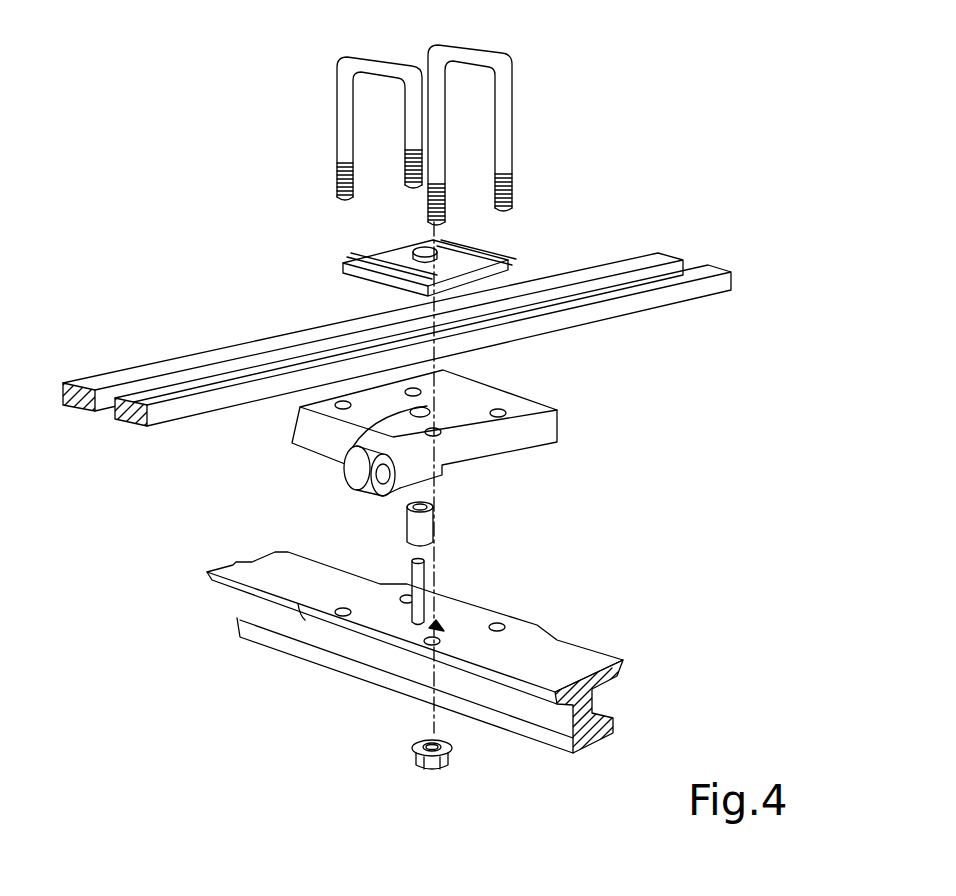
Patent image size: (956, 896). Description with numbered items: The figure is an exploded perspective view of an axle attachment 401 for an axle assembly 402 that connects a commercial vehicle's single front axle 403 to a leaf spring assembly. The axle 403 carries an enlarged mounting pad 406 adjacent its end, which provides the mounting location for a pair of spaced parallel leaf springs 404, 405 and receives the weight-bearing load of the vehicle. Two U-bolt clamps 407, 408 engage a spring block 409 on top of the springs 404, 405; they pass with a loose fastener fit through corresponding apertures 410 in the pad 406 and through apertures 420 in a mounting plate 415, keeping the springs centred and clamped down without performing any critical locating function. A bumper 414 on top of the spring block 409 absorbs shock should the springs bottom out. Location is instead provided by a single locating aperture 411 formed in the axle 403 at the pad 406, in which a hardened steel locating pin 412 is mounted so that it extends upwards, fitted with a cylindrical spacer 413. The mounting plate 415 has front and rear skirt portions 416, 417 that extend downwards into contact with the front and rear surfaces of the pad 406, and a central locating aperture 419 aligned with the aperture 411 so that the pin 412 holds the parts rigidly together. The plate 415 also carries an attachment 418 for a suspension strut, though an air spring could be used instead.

The axle attachment 401 is at (226, 172).
The axle assembly 402 is at (266, 733).
The front axle 403 is at (580, 657).
The leaf spring 404 is at (229, 352).
The leaf spring 405 is at (178, 392).
The mounting pad 406 is at (485, 640).
The U-bolt clamp 407 is at (347, 57).
The U-bolt clamp 408 is at (418, 43).
The spring block 409 is at (341, 271).
The apertures 410 is at (426, 644).
The locating aperture 411 is at (453, 628).
The locating pin 412 is at (423, 582).
The cylindrical spacer 413 is at (438, 524).
The bumper 414 is at (431, 245).
The mounting plate 415 is at (300, 438).
The front skirt portion 416 is at (548, 428).
The rear skirt portion 417 is at (477, 443).
The attachment for a suspension strut 418 is at (403, 480).
The locating aperture 419 is at (418, 415).
The apertures 420 is at (498, 413).